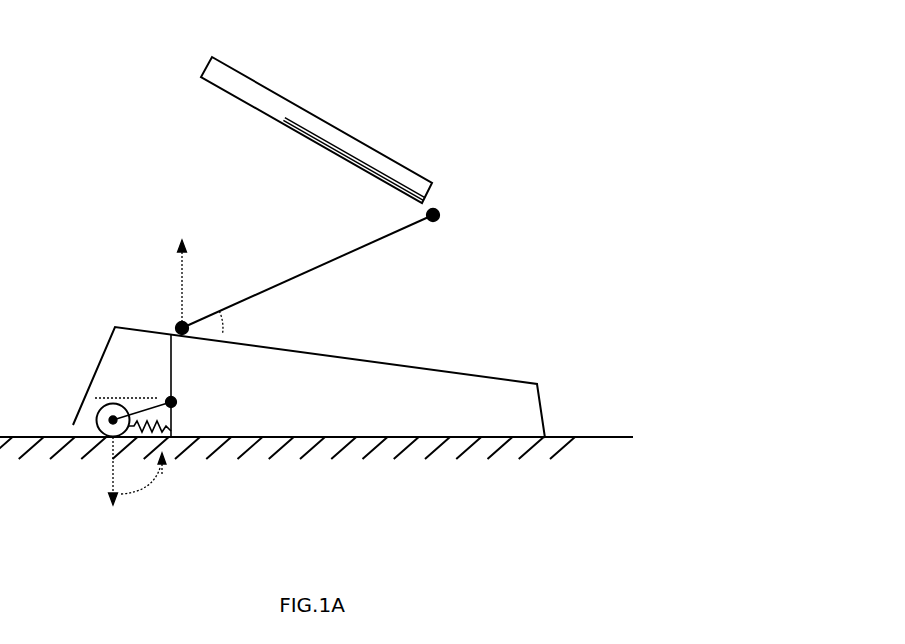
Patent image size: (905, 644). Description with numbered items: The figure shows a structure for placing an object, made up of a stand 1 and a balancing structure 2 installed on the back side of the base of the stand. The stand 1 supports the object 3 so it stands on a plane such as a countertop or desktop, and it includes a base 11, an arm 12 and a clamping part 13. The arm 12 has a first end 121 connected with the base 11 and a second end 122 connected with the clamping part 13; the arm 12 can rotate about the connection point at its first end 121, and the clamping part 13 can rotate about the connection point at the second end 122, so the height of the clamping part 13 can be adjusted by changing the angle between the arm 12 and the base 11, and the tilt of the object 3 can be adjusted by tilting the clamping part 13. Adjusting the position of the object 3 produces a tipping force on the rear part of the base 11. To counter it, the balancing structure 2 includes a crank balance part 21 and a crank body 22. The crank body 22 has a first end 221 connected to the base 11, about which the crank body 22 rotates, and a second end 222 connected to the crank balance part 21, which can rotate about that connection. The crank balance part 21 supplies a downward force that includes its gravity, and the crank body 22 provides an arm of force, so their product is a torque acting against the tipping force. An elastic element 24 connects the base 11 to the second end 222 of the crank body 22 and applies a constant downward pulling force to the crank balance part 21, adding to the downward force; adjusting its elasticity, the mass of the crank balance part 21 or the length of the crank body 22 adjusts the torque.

The stand 1 is at (304, 243).
The balancing structure 2 is at (205, 538).
The object 3 is at (316, 126).
The base 11 is at (309, 374).
The arm 12 is at (307, 271).
The clamping part 13 is at (326, 159).
The crank balance part 21 is at (80, 464).
The crank body 22 is at (154, 472).
The elastic element 24 is at (163, 463).
The first end 121 is at (214, 300).
The second end 122 is at (486, 229).
The first end 221 is at (220, 402).
The second end 222 is at (70, 392).